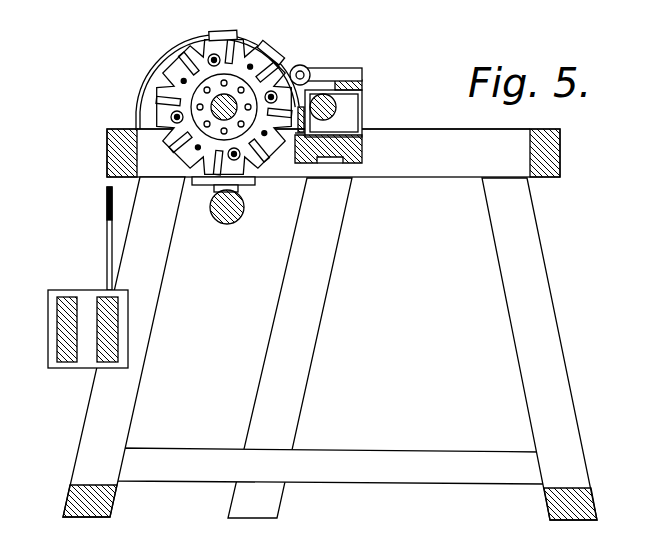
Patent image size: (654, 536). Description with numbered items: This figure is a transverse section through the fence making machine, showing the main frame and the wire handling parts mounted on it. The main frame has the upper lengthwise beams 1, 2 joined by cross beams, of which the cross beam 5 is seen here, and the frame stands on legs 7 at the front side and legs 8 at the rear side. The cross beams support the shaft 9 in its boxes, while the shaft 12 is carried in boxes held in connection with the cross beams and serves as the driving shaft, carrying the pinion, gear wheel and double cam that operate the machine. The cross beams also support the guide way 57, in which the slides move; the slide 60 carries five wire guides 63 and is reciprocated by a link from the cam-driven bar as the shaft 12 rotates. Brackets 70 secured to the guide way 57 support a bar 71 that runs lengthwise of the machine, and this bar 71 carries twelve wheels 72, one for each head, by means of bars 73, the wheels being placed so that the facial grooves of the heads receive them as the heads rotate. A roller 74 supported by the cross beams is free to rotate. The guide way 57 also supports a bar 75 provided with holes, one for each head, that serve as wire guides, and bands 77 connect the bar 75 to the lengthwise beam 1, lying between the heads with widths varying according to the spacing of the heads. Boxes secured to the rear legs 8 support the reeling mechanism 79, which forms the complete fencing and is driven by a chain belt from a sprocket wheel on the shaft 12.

The upper lengthwise beam 1 is at (114, 153).
The upper lengthwise beam 2 is at (552, 153).
The cross beam 5 is at (333, 153).
The legs 7 is at (539, 349).
The legs 8 is at (303, 347).
The shaft 9 is at (213, 100).
The shaft 12 is at (335, 108).
The guide way 57 is at (362, 155).
The slide 60 is at (327, 170).
The wire guides 63 is at (300, 132).
The brackets 70 is at (362, 95).
The bar 71 is at (362, 87).
The wheels 72 is at (303, 64).
The bars 73 is at (331, 62).
The roller 74 is at (223, 211).
The bar 75 is at (305, 127).
The bands 77 is at (195, 50).
The reeling mechanism 79 is at (78, 277).